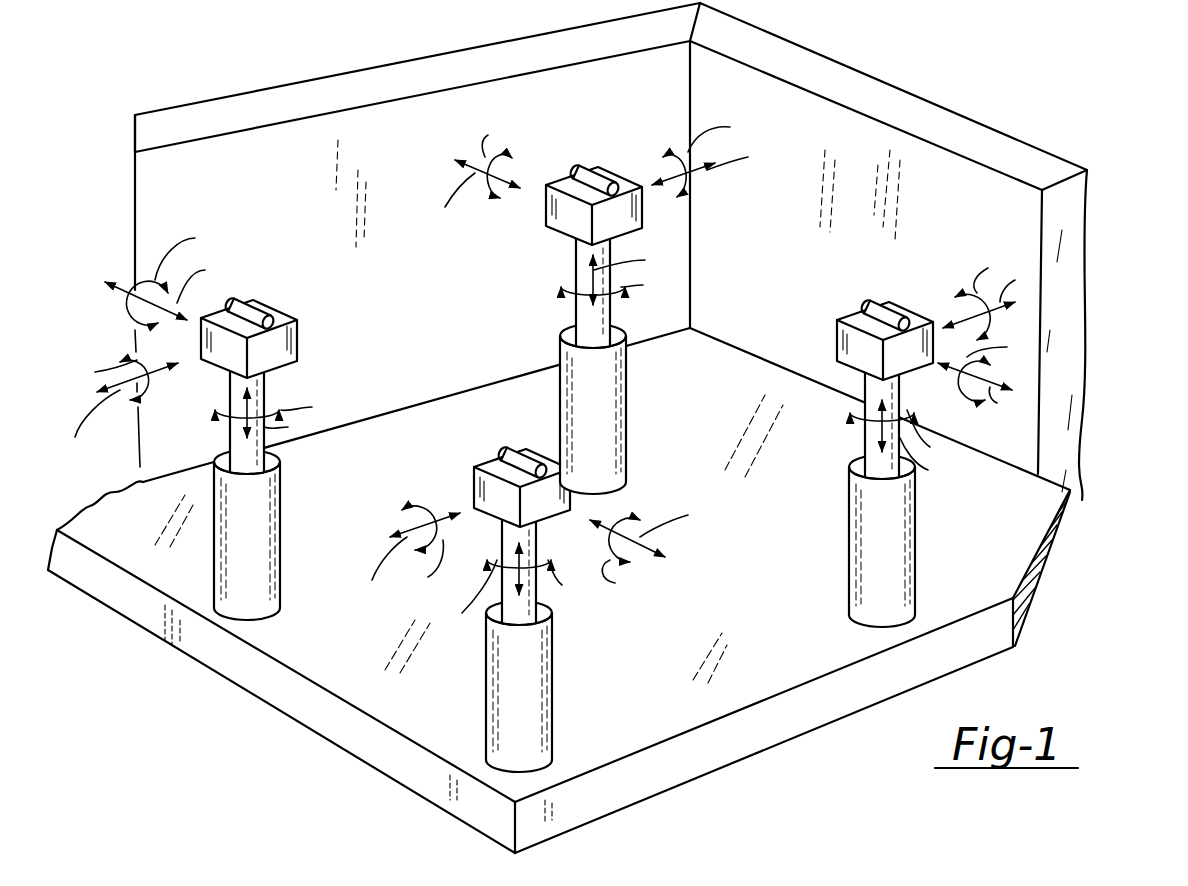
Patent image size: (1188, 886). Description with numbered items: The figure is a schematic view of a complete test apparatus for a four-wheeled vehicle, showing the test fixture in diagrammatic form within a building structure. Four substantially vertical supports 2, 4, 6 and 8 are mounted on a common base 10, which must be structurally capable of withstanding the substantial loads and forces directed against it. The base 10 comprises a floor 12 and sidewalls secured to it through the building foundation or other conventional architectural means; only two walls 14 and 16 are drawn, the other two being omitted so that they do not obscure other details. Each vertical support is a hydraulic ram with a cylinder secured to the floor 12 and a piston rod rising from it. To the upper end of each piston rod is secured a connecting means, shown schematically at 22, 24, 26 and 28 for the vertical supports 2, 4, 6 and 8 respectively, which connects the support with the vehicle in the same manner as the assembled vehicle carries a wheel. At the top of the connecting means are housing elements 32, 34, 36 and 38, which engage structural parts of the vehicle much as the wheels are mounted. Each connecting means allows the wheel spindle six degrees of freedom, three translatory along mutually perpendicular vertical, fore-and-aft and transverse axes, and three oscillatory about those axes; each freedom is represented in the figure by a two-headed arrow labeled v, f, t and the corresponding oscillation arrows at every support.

The vertical support 2 is at (220, 422).
The vertical support 4 is at (530, 584).
The vertical support 6 is at (598, 301).
The vertical support 8 is at (915, 435).
The base 10 is at (610, 428).
The floor 12 is at (363, 743).
The wall 14 is at (147, 192).
The wall 16 is at (1058, 350).
The connecting means 22 is at (289, 322).
The connecting means 24 is at (513, 461).
The connecting means 26 is at (648, 178).
The connecting means 28 is at (899, 312).
The housing element 32 is at (273, 318).
The housing element 34 is at (502, 448).
The housing element 36 is at (578, 165).
The housing element 38 is at (873, 307).